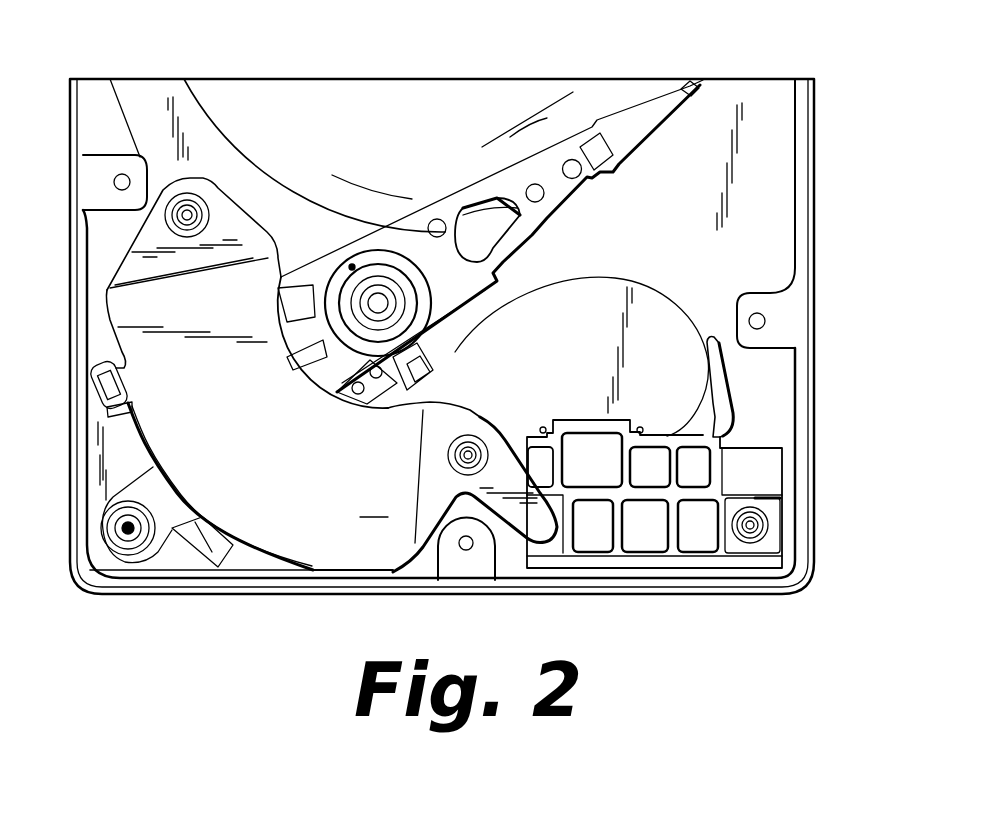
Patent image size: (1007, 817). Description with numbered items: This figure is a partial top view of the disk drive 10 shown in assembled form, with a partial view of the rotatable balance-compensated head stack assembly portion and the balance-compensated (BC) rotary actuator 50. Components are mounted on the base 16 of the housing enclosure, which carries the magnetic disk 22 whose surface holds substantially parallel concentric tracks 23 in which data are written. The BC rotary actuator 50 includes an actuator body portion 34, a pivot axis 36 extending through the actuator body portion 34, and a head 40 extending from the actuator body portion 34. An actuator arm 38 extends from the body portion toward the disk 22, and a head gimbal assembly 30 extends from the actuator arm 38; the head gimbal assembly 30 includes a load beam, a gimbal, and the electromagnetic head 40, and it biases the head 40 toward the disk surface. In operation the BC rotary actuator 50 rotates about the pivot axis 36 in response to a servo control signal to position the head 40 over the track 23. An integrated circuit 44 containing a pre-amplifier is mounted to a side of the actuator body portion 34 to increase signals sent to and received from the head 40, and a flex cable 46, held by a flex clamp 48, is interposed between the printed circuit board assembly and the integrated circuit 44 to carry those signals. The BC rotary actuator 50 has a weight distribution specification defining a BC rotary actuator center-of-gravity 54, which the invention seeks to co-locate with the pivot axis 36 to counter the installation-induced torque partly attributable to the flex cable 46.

The disk drive 10 is at (840, 134).
The base 16 is at (816, 386).
The disk 22 is at (308, 126).
The track 23 is at (351, 175).
The head gimbal assembly 30 is at (647, 108).
The actuator body portion 34 is at (333, 247).
The pivot axis 36 is at (392, 312).
The actuator arm 38 is at (453, 203).
The head 40 is at (691, 82).
The integrated circuit 44 is at (470, 325).
The flex cable 46 is at (643, 283).
The flex clamp 48 is at (692, 553).
The BC rotary actuator 50 is at (515, 107).
The BC rotary actuator center-of-gravity 54 is at (357, 260).